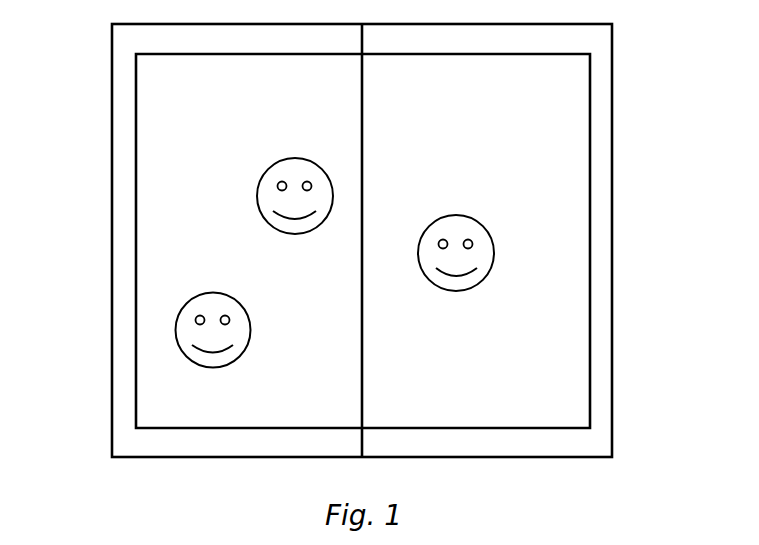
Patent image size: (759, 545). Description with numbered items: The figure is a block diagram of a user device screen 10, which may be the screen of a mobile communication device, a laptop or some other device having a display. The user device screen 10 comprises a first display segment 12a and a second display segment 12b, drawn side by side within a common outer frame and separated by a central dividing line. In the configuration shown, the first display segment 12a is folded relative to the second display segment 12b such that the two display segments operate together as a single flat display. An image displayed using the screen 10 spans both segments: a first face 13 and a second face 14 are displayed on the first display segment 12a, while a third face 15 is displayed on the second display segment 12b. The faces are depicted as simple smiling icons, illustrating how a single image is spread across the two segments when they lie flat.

The user device screen 10 is at (656, 480).
The first display segment 12a is at (136, 398).
The second display segment 12b is at (590, 393).
The first face 13 is at (263, 216).
The second face 14 is at (240, 355).
The third face 15 is at (483, 278).